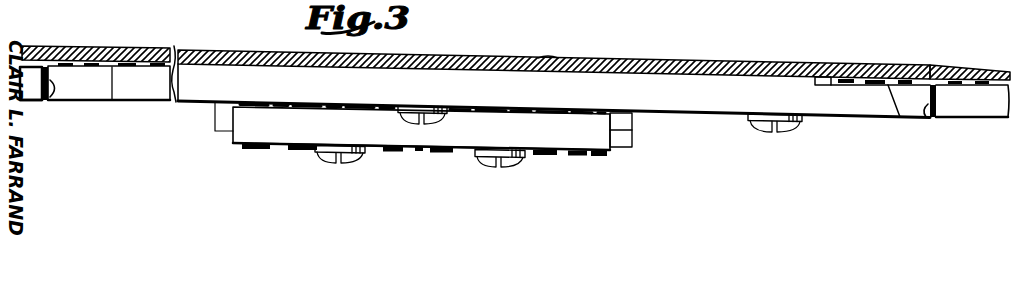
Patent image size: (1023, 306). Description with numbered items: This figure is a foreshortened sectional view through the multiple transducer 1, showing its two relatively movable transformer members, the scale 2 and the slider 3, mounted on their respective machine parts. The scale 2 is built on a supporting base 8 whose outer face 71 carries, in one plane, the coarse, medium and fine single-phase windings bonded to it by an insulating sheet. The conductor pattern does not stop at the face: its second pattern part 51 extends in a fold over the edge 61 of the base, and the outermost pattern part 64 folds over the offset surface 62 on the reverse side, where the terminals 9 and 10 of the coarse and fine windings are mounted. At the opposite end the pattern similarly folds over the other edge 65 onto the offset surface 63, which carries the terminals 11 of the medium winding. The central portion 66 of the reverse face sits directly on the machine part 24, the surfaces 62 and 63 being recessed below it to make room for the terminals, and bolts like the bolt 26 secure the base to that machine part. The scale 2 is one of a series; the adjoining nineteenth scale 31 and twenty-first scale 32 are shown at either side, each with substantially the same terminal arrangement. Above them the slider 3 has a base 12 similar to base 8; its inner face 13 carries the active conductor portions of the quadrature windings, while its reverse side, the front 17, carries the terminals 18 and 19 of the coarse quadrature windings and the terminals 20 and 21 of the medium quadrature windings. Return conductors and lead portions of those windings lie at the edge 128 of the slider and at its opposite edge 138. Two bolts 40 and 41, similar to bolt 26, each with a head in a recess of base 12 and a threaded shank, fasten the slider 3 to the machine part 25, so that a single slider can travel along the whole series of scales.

The multiple transducer 1 is at (227, 155).
The scale 2 is at (446, 76).
The slider 3 is at (383, 149).
The supporting base 8 is at (260, 68).
The terminal 9 is at (72, 63).
The terminal 10 is at (123, 62).
The terminals 11 is at (905, 78).
The base 12 is at (466, 149).
The inner face 13 is at (313, 107).
The front 17 is at (468, 148).
The terminal 18 is at (302, 152).
The terminal 19 is at (543, 156).
The terminal 20 is at (250, 152).
The terminal 21 is at (589, 156).
The machine part 24 is at (646, 63).
The machine part 25 is at (622, 148).
The bolt 26 is at (446, 115).
The scale 31 is at (35, 109).
The scale 32 is at (968, 118).
The bolt 40 is at (343, 163).
The bolt 41 is at (514, 166).
The second pattern part 51 is at (49, 90).
The edge 61 is at (31, 83).
The offset surface 62 is at (157, 62).
The offset surface 63 is at (833, 82).
The outermost pattern part 64 is at (112, 100).
The edge 65 is at (938, 98).
The central portion 66 is at (573, 68).
The outer face 71 is at (702, 116).
The edge 128 is at (233, 126).
The edge 138 is at (631, 137).